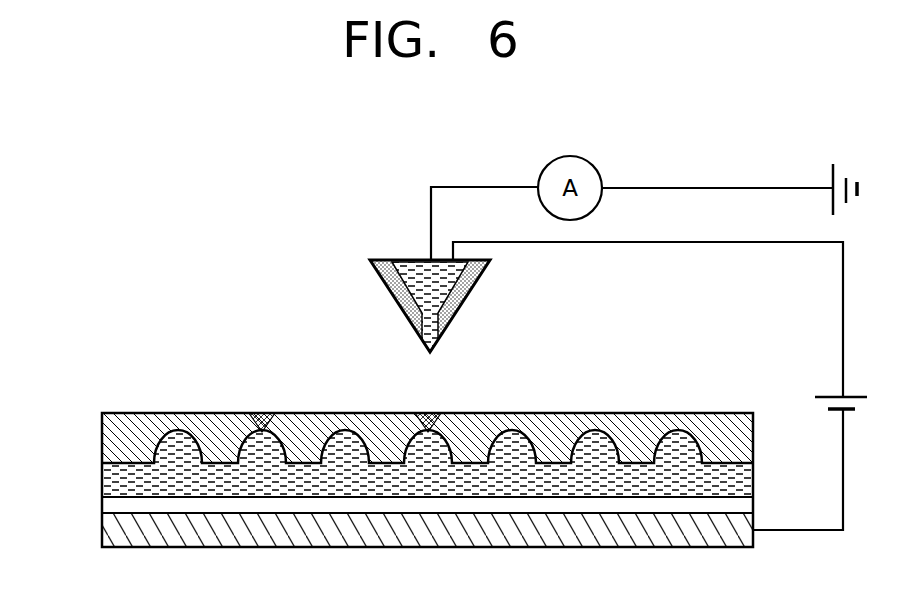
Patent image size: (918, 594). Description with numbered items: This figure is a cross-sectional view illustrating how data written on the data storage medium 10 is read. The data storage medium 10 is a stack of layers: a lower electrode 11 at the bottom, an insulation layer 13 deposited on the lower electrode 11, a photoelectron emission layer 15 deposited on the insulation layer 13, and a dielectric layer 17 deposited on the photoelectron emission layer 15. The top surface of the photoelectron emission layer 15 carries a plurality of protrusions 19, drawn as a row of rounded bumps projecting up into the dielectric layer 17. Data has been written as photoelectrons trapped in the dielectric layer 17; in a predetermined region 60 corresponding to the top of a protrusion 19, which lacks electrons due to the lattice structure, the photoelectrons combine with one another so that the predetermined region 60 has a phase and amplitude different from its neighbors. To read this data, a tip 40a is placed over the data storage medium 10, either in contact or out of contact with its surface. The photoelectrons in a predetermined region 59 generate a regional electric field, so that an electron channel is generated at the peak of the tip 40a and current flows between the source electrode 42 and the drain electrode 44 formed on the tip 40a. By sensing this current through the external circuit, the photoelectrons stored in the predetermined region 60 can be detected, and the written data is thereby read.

The data storage medium 10 is at (88, 366).
The lower electrode 11 is at (101, 530).
The insulation layer 13 is at (101, 505).
The photoelectron emission layer 15 is at (101, 477).
The dielectric layer 17 is at (101, 443).
The protrusions 19 is at (181, 430).
The tip 40a is at (409, 283).
The source electrode 42 is at (392, 308).
The drain electrode 44 is at (467, 306).
The predetermined region 59 is at (266, 413).
The predetermined region 60 is at (438, 413).